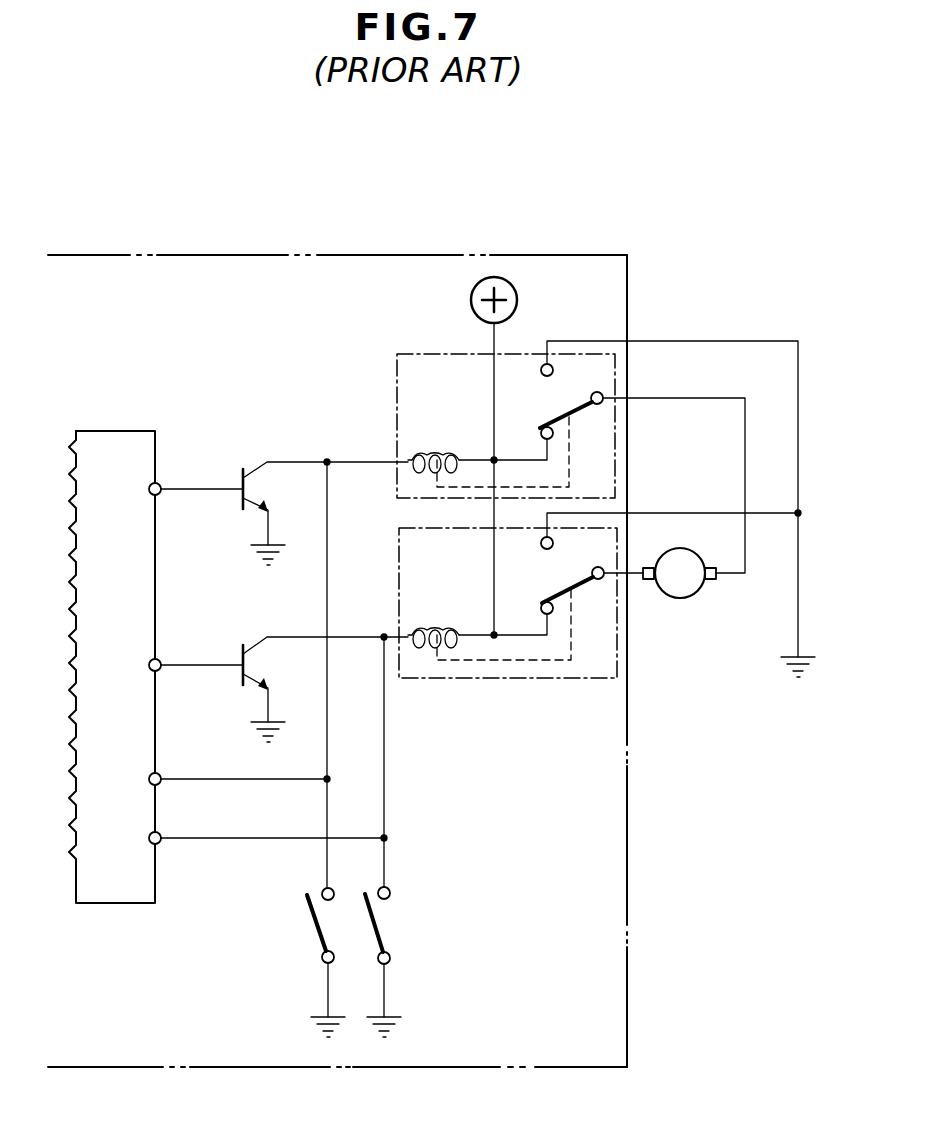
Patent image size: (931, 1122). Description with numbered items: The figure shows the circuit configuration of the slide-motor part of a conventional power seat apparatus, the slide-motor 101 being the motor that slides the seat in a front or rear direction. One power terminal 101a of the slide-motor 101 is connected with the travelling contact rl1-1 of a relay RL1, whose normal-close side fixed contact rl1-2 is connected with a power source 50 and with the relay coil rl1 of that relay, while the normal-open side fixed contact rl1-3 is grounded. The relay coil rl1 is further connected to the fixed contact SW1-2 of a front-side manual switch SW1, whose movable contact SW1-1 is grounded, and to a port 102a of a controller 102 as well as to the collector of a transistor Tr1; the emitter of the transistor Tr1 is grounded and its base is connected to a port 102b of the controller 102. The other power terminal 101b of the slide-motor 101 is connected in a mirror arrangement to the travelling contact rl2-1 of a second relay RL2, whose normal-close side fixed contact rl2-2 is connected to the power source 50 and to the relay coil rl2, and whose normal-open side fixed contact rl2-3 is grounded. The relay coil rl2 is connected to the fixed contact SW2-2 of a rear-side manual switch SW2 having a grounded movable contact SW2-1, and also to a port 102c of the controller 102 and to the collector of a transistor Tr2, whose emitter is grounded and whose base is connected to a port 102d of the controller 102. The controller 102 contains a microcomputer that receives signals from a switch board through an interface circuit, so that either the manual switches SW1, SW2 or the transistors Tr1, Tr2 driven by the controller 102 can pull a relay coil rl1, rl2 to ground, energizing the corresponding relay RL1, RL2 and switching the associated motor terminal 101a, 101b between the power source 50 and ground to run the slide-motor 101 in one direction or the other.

The controller 102 is at (118, 431).
The port 102a is at (160, 775).
The port 102b is at (160, 485).
The port 102c is at (160, 834).
The port 102d is at (159, 670).
The transistor Tr1 is at (255, 462).
The transistor Tr2 is at (270, 620).
The power source 50 is at (471, 296).
The relay RL1 is at (397, 354).
The relay RL2 is at (437, 678).
The relay coil rl1 is at (428, 455).
The travelling contact rl1-1 is at (596, 392).
The normal-close side fixed contact rl1-2 is at (541, 436).
The normal-open side fixed contact rl1-3 is at (544, 364).
The relay coil rl2 is at (433, 630).
The travelling contact rl2-1 is at (592, 571).
The normal-close side fixed contact rl2-2 is at (541, 611).
The normal-open side fixed contact rl2-3 is at (553, 543).
The slide-motor 101 is at (707, 632).
The power terminal 101a is at (712, 580).
The power terminal 101b is at (648, 580).
The front-side manual switch SW1 is at (265, 908).
The movable contact SW1-1 is at (312, 917).
The fixed contact SW1-2 is at (322, 892).
The rear-side manual switch SW2 is at (431, 934).
The movable contact SW2-1 is at (378, 920).
The fixed contact SW2-2 is at (389, 889).